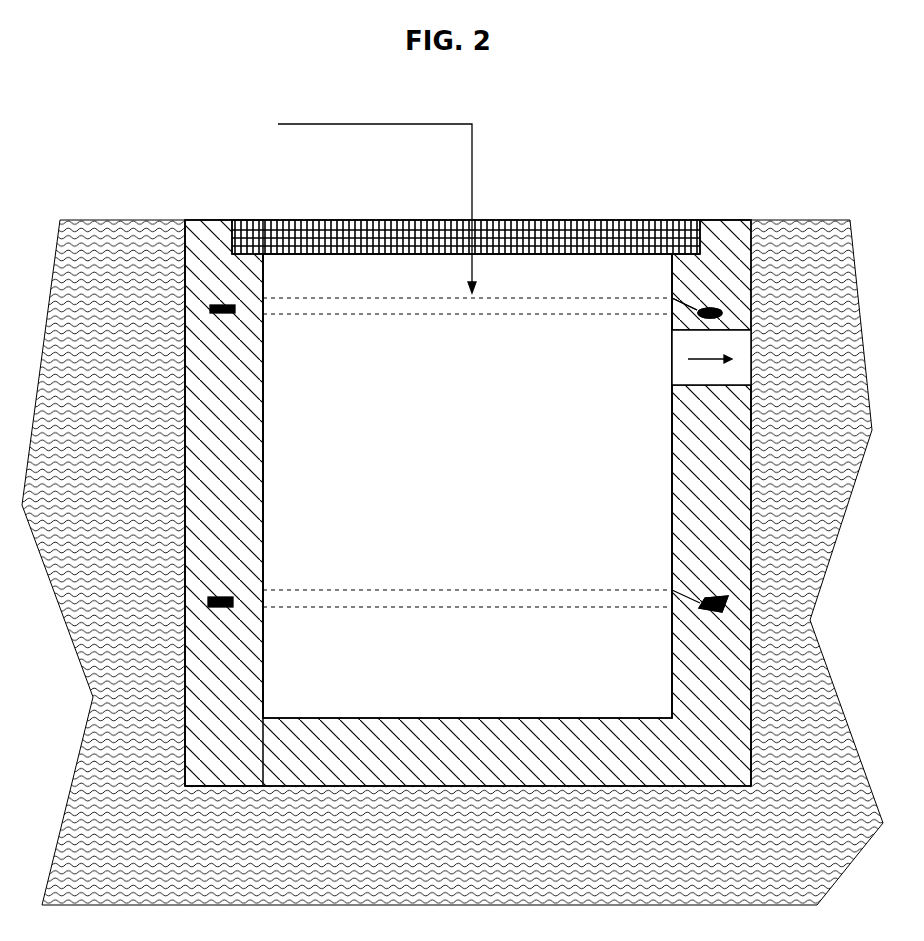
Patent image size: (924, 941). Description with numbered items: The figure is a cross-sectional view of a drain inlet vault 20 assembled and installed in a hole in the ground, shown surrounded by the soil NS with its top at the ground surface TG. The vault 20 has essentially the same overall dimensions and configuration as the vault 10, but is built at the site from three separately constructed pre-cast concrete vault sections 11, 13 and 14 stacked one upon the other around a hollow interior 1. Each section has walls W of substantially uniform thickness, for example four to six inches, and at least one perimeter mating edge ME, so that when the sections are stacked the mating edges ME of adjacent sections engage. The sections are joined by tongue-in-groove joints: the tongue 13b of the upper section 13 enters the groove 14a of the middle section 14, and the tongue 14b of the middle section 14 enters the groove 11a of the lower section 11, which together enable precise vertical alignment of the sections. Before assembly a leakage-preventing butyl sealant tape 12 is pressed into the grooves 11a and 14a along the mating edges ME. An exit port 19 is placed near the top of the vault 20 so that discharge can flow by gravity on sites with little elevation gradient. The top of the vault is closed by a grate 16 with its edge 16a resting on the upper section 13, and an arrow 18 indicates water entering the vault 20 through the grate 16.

The interior space of the pit 1 is at (532, 327).
The vault 10 is at (212, 305).
The pre-cast vault section 11 is at (200, 256).
The groove 11a is at (745, 610).
The sealant tape 12 is at (213, 313).
The pre-cast vault section 13 is at (730, 243).
The tongue 13b is at (722, 308).
The pre-cast vault section 14 is at (700, 468).
The groove 14a is at (697, 312).
The tongue 14b is at (727, 600).
The grid cover 16 is at (352, 227).
The cover edge 16a is at (673, 255).
The insertion direction 18 is at (361, 205).
The exit port 19 is at (730, 341).
The drain inlet vault 20 is at (495, 789).
The ground surface TG is at (75, 220).
The mating edge ME is at (233, 307).
The wall W is at (245, 283).
The surrounding soil NS is at (735, 480).